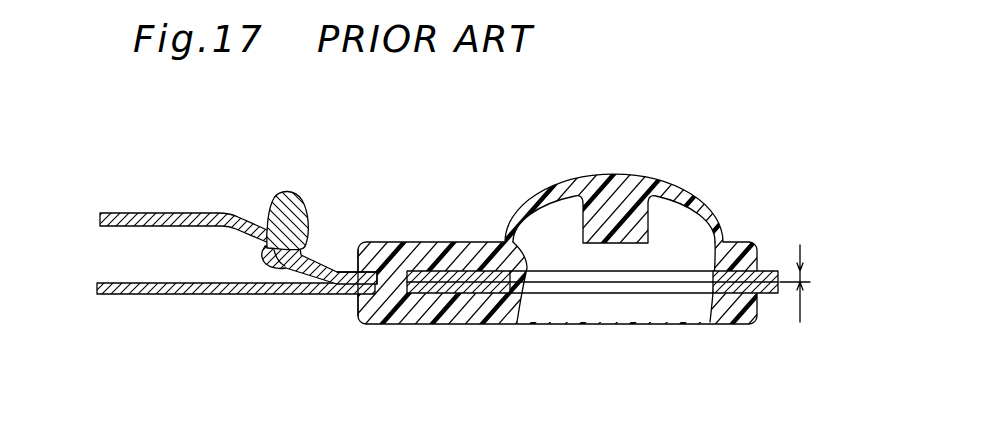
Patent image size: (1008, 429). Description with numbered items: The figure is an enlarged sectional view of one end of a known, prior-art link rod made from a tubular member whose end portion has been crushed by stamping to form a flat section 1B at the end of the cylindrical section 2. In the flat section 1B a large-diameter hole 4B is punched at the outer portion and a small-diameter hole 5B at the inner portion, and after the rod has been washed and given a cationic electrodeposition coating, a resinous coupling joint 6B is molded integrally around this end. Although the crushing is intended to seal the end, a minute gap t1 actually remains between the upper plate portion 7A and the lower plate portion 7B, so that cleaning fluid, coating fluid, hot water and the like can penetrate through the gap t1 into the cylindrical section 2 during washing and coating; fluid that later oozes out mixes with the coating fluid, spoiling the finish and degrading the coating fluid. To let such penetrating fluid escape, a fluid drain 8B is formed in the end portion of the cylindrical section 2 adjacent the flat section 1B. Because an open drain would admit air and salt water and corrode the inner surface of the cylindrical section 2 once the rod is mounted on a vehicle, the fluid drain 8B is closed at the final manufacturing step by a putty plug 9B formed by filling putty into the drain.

The cylindrical section 2 is at (132, 242).
The putty plug 9B is at (283, 193).
The fluid drain 8B is at (262, 265).
The upper plate portion 7A is at (347, 325).
The lower plate portion 7B is at (347, 325).
The large-diameter hole 4B is at (520, 245).
The small-diameter hole 5B is at (388, 323).
The resinous coupling joint 6B is at (662, 315).
The flat section 1B is at (767, 268).
The minute gap t1 is at (805, 273).